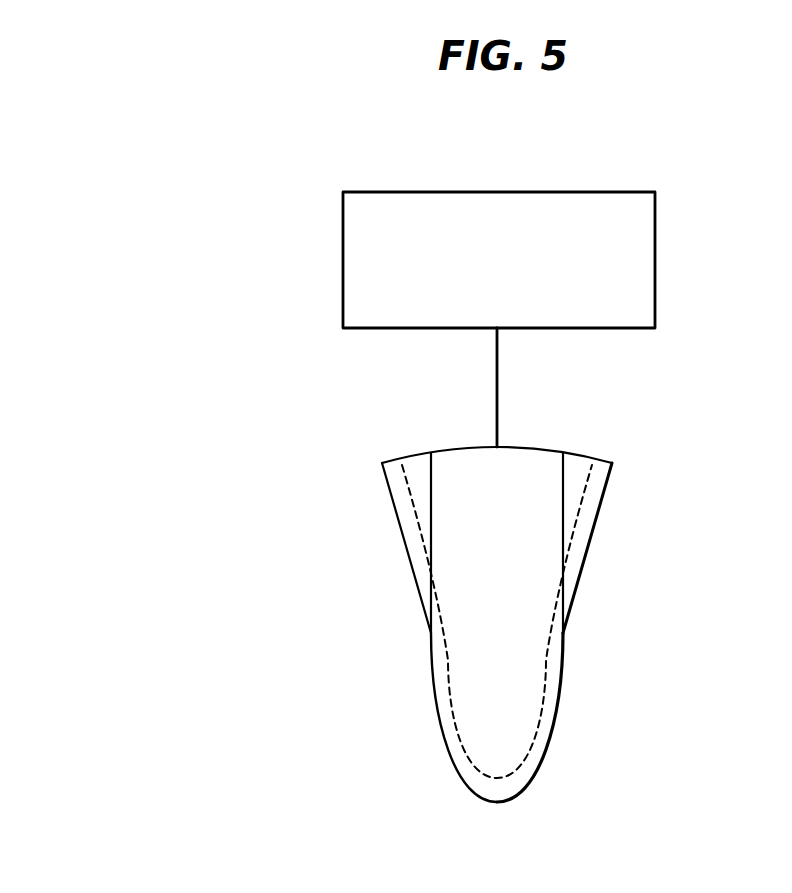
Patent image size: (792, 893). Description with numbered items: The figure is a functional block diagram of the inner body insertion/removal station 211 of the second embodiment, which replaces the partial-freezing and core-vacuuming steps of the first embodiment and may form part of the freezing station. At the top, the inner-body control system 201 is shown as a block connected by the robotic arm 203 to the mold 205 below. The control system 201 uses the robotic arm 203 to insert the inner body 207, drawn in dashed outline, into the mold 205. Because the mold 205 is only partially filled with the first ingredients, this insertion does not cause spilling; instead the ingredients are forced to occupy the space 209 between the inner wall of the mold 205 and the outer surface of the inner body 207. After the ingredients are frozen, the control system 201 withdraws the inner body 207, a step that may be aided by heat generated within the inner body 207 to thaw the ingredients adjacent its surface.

The inner-body control system 201 is at (655, 272).
The robotic arm 203 is at (497, 407).
The mold 205 is at (608, 494).
The inner body 207 is at (552, 600).
The space 209 is at (552, 712).
The inner body insertion/removal station 211 is at (292, 450).